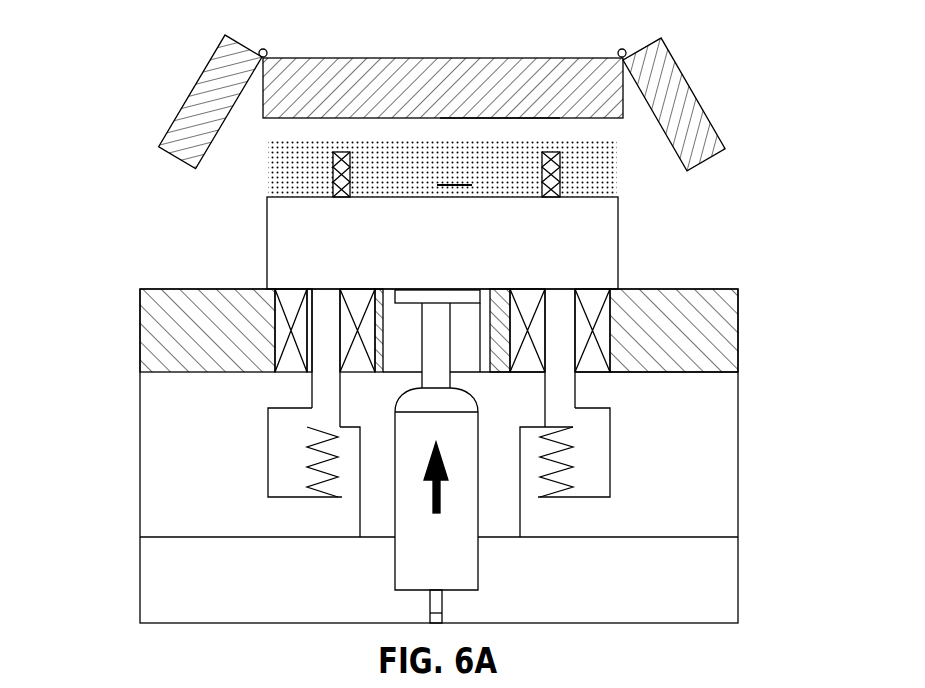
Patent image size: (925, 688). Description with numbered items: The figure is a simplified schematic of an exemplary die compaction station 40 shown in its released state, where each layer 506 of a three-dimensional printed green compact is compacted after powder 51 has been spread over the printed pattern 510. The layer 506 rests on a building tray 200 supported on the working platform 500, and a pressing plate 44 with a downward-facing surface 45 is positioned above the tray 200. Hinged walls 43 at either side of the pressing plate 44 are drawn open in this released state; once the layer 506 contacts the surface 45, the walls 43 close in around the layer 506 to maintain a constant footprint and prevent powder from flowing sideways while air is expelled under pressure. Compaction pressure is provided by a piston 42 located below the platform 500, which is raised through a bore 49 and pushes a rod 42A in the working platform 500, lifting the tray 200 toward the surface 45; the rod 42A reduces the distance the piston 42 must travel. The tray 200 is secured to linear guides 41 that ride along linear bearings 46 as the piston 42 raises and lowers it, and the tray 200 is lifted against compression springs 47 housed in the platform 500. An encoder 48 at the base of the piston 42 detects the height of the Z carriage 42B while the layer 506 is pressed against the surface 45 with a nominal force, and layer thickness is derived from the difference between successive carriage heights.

The compaction station 40 is at (766, 79).
The linear guide 41 is at (570, 372).
The piston 42 is at (478, 498).
The rod 42A is at (420, 335).
The Z carriage 42B is at (457, 313).
The walls 43 is at (212, 53).
The pressing plate 44 is at (378, 72).
The surface 45 is at (518, 118).
The linear bearings 46 is at (620, 362).
The compression springs 47 is at (305, 447).
The encoder 48 is at (430, 610).
The bore 49 is at (483, 372).
The powder 51 is at (457, 172).
The building tray 200 is at (600, 245).
The working platform 500 is at (162, 327).
The layer 506 is at (617, 173).
The printed pattern 510 is at (333, 165).